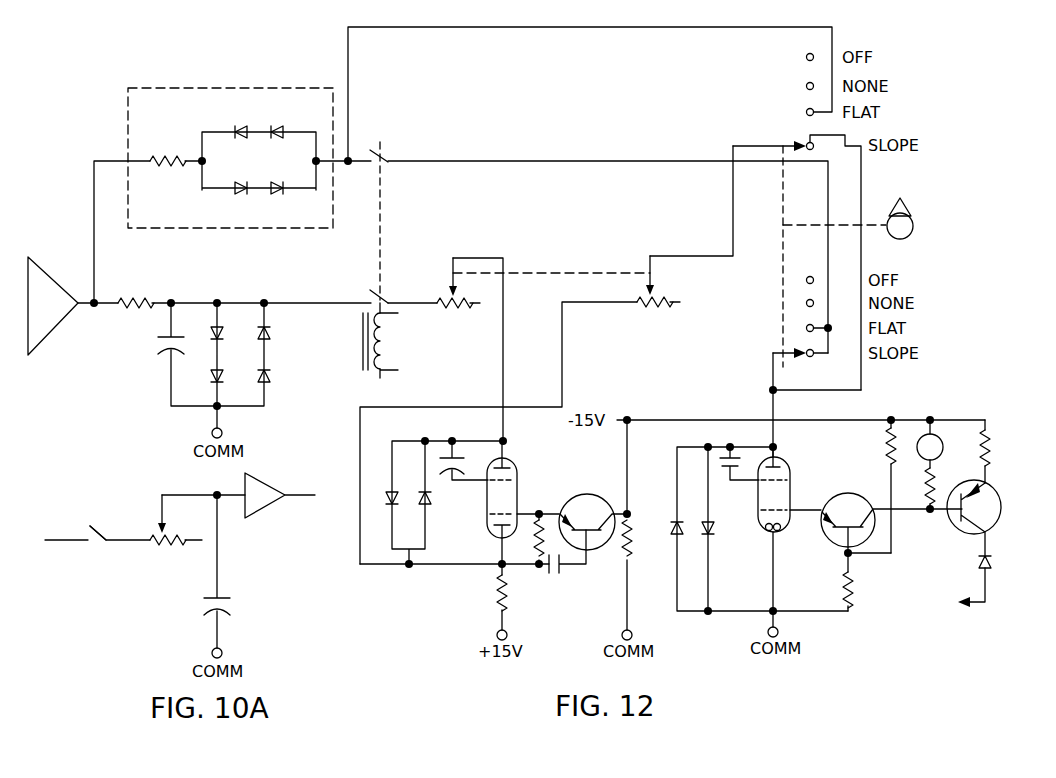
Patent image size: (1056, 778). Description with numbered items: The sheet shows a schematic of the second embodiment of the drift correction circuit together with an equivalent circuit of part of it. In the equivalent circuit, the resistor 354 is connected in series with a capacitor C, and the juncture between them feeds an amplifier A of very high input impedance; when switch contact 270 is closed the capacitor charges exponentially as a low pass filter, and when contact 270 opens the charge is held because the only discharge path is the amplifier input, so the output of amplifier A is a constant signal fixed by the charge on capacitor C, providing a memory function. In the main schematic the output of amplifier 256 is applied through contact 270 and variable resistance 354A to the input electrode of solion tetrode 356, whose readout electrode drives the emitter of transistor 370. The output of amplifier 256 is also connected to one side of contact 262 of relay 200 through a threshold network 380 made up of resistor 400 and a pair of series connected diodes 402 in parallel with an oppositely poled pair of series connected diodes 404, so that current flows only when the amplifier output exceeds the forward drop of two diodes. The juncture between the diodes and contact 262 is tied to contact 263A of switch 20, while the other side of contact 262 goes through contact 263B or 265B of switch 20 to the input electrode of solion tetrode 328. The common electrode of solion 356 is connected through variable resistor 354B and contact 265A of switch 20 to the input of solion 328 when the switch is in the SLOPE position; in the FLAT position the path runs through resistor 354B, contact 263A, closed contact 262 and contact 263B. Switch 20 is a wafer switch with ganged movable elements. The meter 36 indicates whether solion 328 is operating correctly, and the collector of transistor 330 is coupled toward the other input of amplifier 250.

In FIG. 10A, the switch contact 270 is at (100, 530).
In FIG. 12, the switch contact 270 is at (386, 293).
In FIG. 10A, the resistor 354 is at (165, 548).
In FIG. 10A, the amplifier A is at (262, 510).
In FIG. 10A, the capacitor C is at (232, 606).
In FIG. 12, the amplifier 256 is at (40, 268).
In FIG. 12, the threshold network 380 is at (238, 88).
In FIG. 12, the resistor 400 is at (186, 156).
In FIG. 12, the series connected diodes 402 is at (290, 122).
In FIG. 12, the series connected diodes 404 is at (282, 196).
In FIG. 12, the switch contact 262 is at (386, 152).
In FIG. 12, the relay 200 is at (386, 345).
In FIG. 12, the variable resistance 354A is at (448, 312).
In FIG. 12, the variable resistor 354B is at (646, 311).
In FIG. 12, the switch contact 263A is at (810, 94).
In FIG. 12, the switch contact 265A is at (797, 142).
In FIG. 12, the switch contact 263B is at (806, 326).
In FIG. 12, the switch contact 265B is at (800, 358).
In FIG. 12, the correction switch 20 is at (913, 226).
In FIG. 12, the solion tetrode 356 is at (518, 466).
In FIG. 12, the transistor 370 is at (580, 496).
In FIG. 12, the solion tetrode 328 is at (792, 470).
In FIG. 12, the meter 36 is at (944, 447).
In FIG. 12, the transistor 330 is at (1002, 497).
In FIG. 12, the amplifier 250 is at (949, 600).